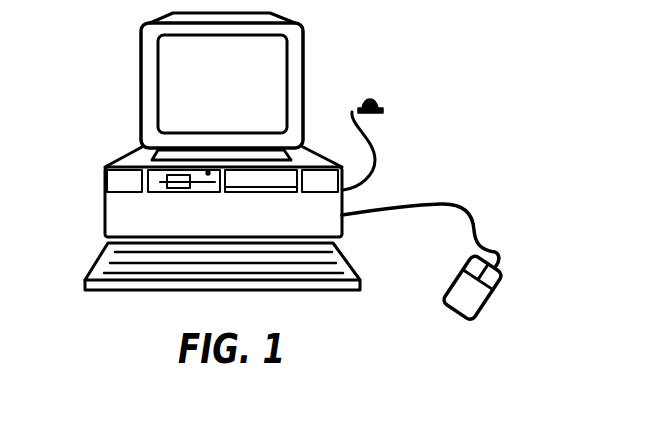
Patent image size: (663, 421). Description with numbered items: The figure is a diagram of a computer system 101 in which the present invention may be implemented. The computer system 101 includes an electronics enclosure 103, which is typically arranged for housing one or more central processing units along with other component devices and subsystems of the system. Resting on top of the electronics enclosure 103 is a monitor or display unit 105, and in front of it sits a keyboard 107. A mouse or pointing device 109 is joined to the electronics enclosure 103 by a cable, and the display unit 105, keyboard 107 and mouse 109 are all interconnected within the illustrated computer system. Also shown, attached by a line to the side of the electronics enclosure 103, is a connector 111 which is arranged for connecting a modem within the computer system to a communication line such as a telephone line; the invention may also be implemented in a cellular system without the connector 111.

The computer system 101 is at (443, 155).
The electronics enclosure 103 is at (117, 203).
The monitor or display unit 105 is at (140, 93).
The keyboard 107 is at (92, 260).
The mouse or pointing device 109 is at (519, 288).
The connector 111 is at (370, 97).